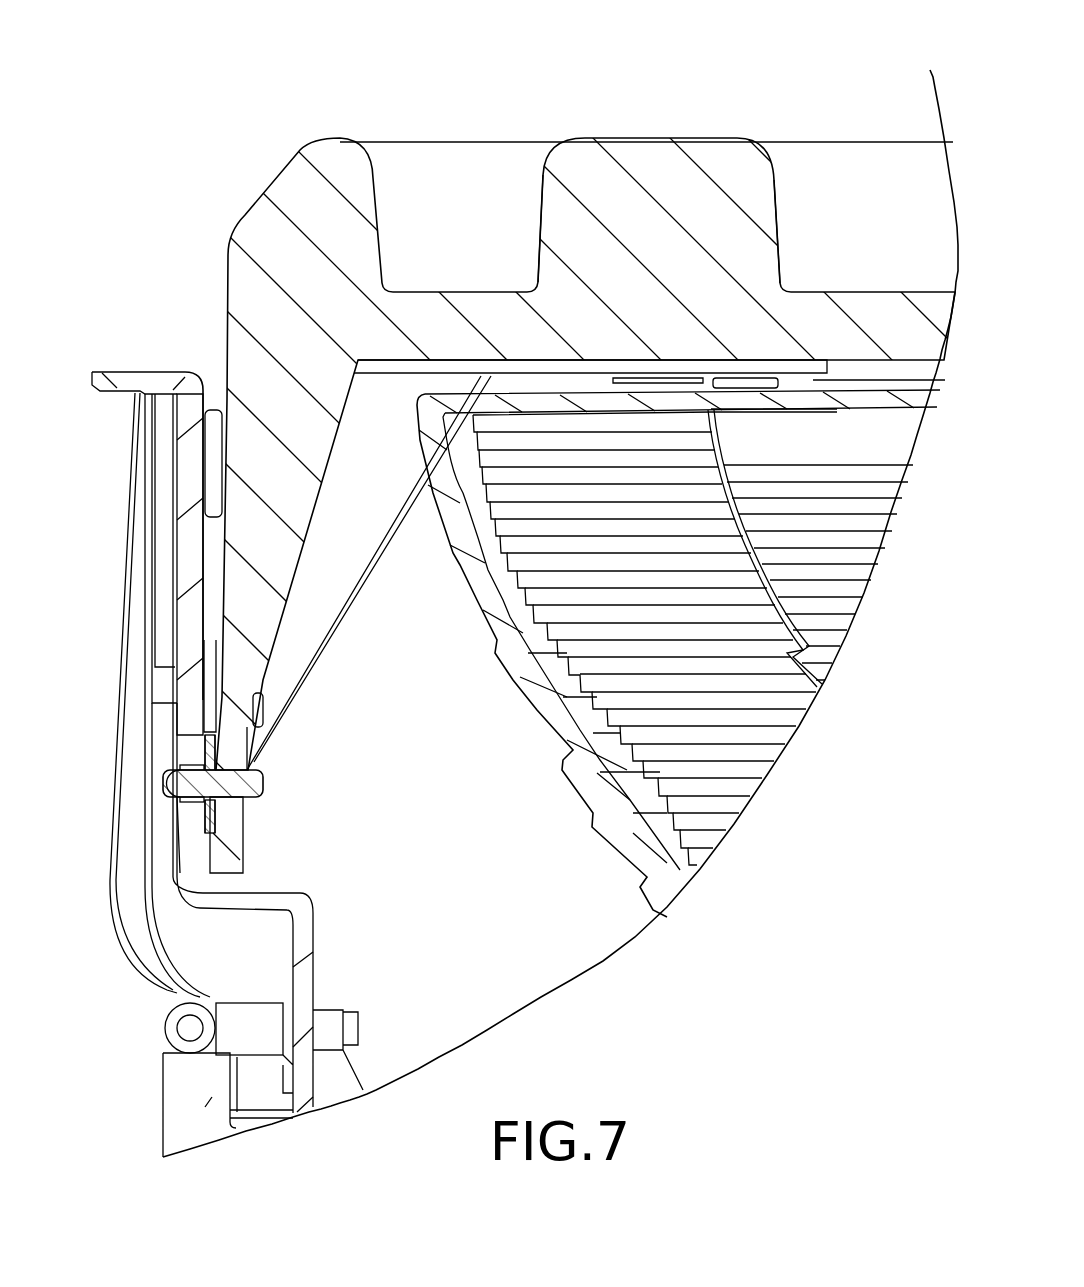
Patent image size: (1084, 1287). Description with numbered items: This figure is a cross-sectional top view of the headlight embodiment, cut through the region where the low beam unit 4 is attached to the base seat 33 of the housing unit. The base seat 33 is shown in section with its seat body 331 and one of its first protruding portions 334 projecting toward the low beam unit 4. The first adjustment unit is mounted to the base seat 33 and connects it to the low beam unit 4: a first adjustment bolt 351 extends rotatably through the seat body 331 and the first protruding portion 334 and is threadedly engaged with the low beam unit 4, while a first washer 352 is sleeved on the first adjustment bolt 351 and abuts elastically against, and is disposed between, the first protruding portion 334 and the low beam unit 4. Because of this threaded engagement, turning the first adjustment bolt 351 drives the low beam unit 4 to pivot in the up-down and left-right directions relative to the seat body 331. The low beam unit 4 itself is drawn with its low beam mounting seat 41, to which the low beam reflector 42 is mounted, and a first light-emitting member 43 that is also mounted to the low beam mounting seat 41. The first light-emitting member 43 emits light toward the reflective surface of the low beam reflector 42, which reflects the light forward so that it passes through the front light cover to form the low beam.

The low beam unit 4 is at (607, 130).
The low beam mounting seat 41 is at (683, 193).
The low beam reflector 42 is at (827, 528).
The first light-emitting member 43 is at (742, 375).
The base seat 33 is at (147, 370).
The seat body 331 is at (192, 495).
The first protruding portion 334 is at (203, 755).
The first adjustment bolt 351 is at (187, 788).
The first washer 352 is at (203, 830).